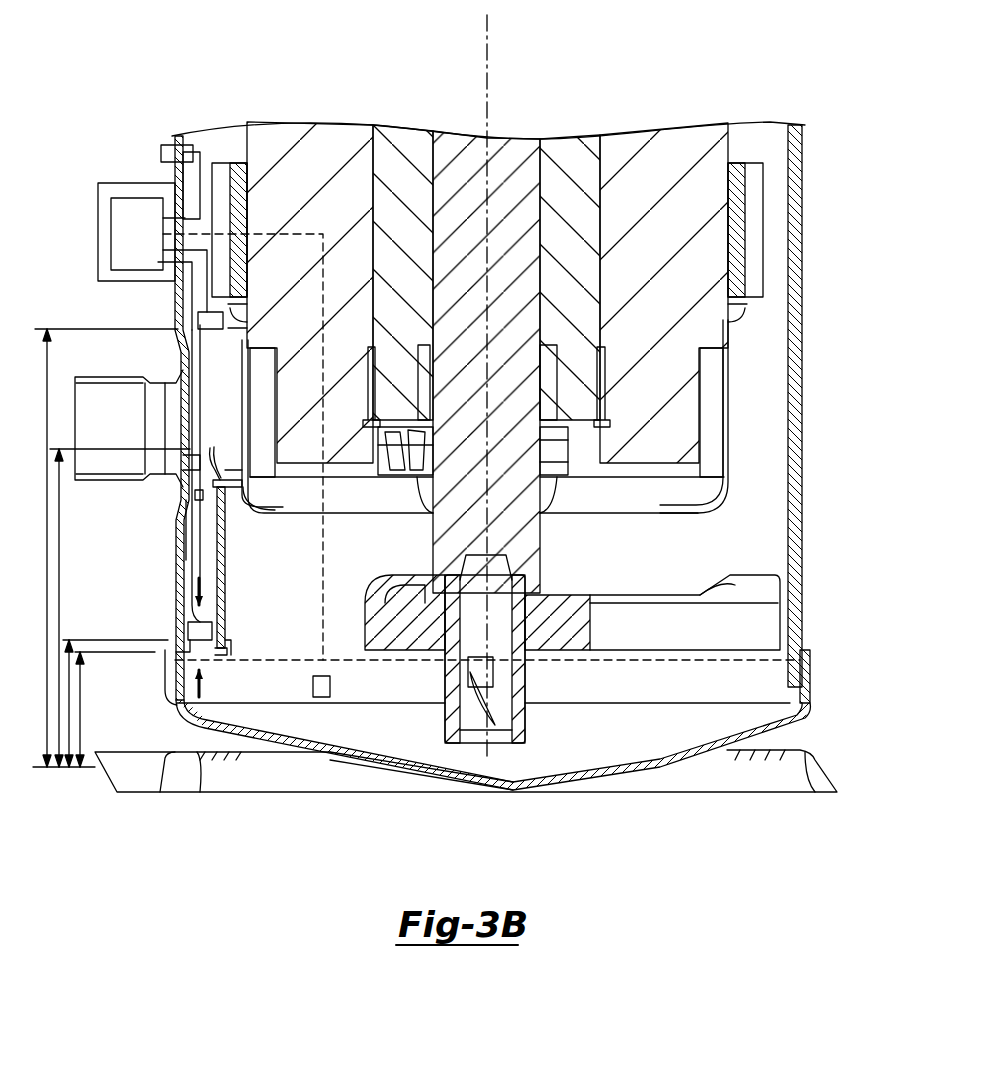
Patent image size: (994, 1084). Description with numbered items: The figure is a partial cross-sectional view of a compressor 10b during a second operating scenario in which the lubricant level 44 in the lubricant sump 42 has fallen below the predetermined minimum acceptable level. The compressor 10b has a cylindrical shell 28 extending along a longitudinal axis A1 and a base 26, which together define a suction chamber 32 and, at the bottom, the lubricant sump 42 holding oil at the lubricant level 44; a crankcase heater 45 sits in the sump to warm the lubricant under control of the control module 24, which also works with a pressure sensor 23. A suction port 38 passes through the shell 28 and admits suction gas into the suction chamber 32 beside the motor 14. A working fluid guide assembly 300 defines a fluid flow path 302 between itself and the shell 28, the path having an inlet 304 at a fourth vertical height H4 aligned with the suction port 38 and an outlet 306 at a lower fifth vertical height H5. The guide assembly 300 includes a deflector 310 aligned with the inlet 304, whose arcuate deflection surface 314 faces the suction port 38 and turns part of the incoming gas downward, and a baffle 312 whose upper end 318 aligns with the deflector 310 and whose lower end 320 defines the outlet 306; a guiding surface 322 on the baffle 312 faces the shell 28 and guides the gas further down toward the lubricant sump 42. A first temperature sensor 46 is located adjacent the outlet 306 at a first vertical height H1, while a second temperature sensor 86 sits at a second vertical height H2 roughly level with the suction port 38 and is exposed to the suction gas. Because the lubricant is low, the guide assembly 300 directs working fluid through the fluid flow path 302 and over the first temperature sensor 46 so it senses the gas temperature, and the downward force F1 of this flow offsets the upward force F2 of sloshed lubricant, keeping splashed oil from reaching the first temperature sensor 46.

The compressor 10b is at (708, 66).
The motor 14 is at (740, 320).
The pressure sensor 23 is at (161, 152).
The control module 24 is at (122, 225).
The base 26 is at (592, 790).
The cylindrical shell 28 is at (178, 578).
The suction chamber 32 is at (750, 547).
The suction port 38 is at (101, 377).
The lubricant sump 42 is at (590, 792).
The lubricant level 44 is at (649, 662).
The crankcase heater 45 is at (322, 700).
The first temperature sensor 46 is at (215, 616).
The second temperature sensor 86 is at (223, 322).
The working fluid guide assembly 300 is at (267, 512).
The fluid flow path 302 is at (195, 549).
The inlet 304 is at (212, 448).
The outlet 306 is at (176, 652).
The deflector 310 is at (218, 464).
The baffle 312 is at (242, 556).
The deflection surface 314 is at (205, 476).
The upper end 318 is at (247, 488).
The lower end 320 is at (220, 656).
The guiding surface 322 is at (212, 535).
The longitudinal axis A1 is at (487, 62).
The downward force F1 is at (205, 590).
The upward force F2 is at (205, 689).
The first vertical height H1 is at (72, 700).
The second vertical height H2 is at (50, 416).
The fourth vertical height H4 is at (60, 600).
The fifth vertical height H5 is at (82, 723).